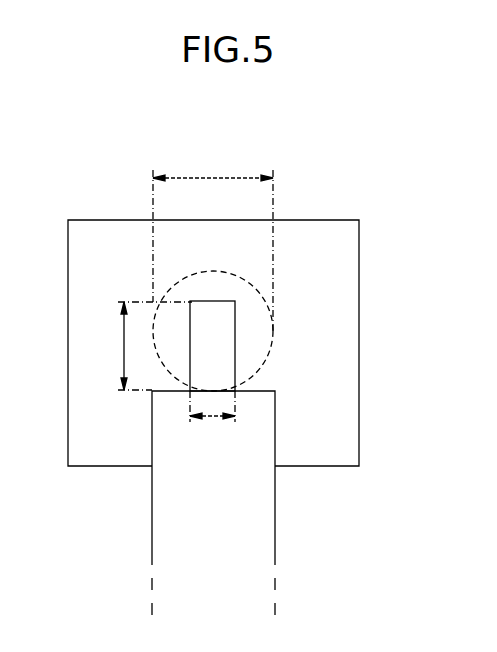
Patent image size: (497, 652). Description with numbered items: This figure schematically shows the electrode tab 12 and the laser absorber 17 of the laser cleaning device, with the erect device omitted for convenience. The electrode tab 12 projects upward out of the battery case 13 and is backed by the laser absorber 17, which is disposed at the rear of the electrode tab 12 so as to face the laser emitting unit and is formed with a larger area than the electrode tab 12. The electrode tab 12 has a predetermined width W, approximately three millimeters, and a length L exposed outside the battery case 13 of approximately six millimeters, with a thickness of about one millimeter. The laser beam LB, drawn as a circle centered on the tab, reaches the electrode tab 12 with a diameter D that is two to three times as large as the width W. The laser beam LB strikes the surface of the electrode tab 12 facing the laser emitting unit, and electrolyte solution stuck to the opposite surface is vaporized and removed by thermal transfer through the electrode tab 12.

The laser absorber 17 is at (340, 241).
The battery case 13 is at (255, 531).
The electrode tab 12 is at (225, 353).
The laser beam LB is at (295, 331).
The diameter of the laser beam D is at (213, 241).
The length of the electrode tab L is at (145, 346).
The width of the electrode tab W is at (212, 422).